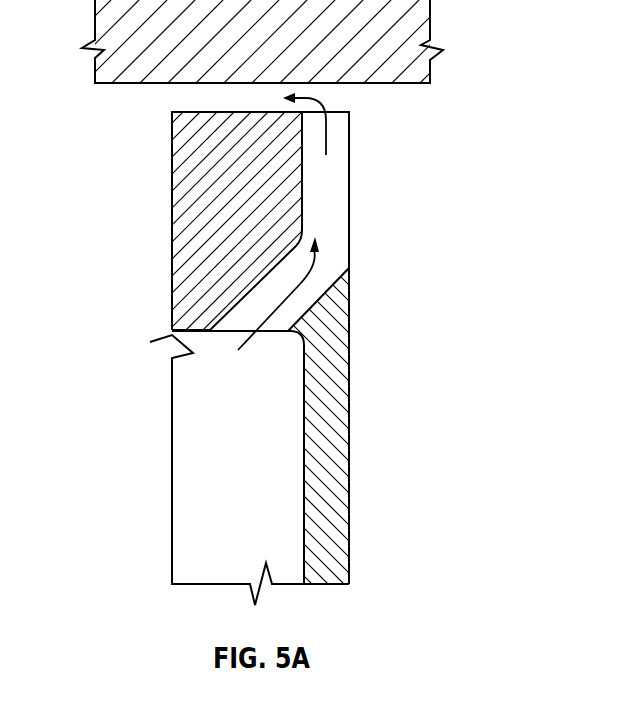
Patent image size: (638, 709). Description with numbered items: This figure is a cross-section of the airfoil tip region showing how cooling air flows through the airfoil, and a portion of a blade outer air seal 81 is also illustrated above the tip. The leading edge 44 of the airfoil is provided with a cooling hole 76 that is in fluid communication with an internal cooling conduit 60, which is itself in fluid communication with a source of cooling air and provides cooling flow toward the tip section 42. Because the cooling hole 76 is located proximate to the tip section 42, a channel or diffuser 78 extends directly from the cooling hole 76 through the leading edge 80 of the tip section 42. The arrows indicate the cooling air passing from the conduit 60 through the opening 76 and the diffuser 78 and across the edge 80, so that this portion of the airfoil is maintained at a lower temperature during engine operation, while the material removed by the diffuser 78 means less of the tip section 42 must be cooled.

The blade outer air seal 81 is at (178, 83).
The tip section 42 is at (240, 93).
The leading edge 80 is at (349, 112).
The diffuser 78 is at (303, 200).
The cooling hole 76 is at (337, 284).
The internal cooling conduit 60 is at (320, 446).
The leading edge 44 is at (350, 508).